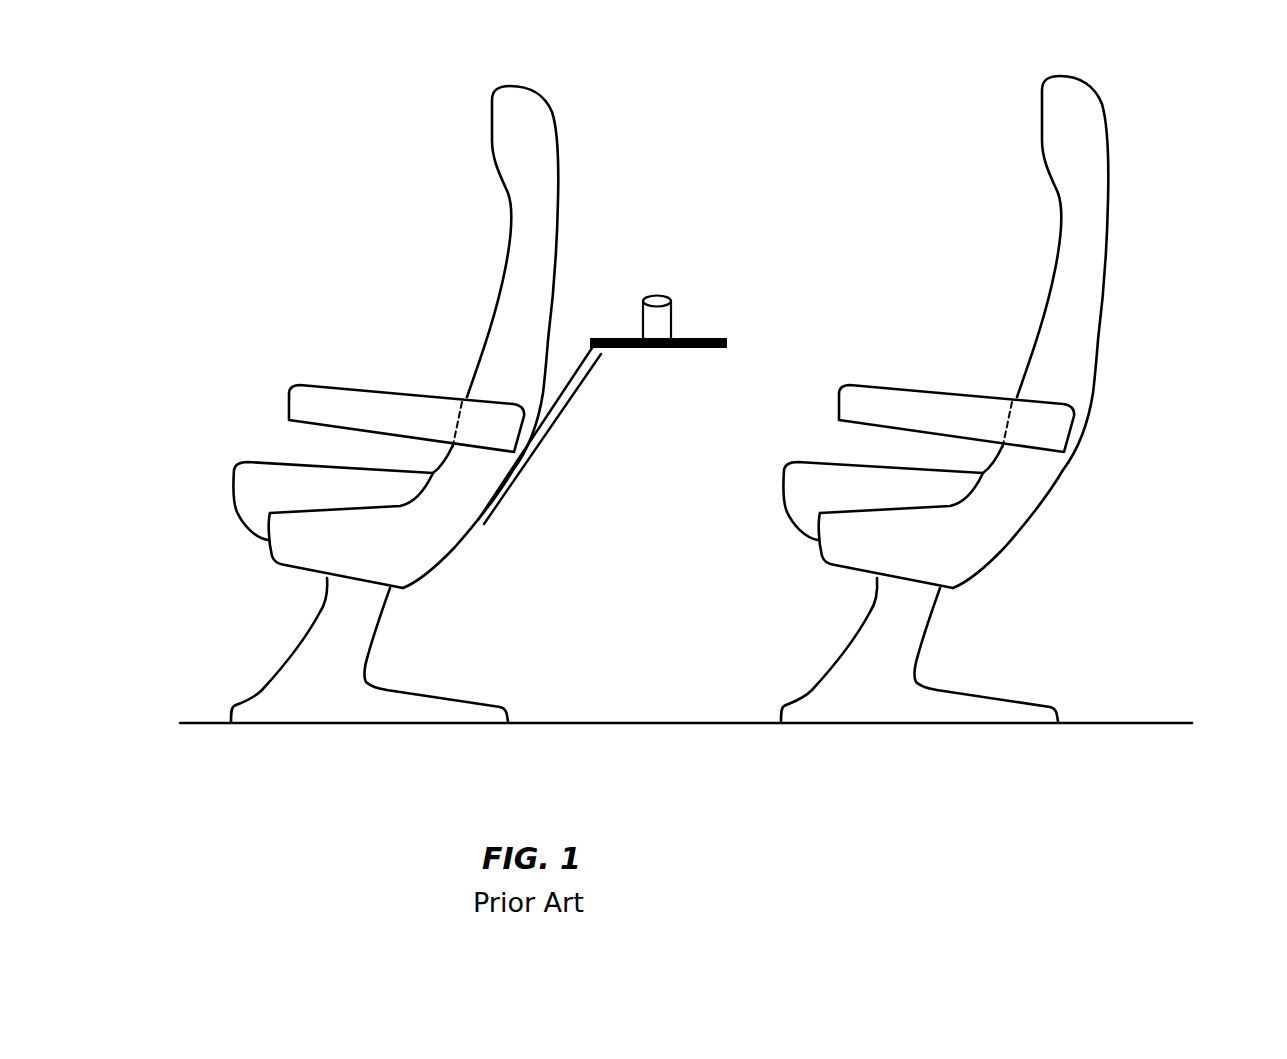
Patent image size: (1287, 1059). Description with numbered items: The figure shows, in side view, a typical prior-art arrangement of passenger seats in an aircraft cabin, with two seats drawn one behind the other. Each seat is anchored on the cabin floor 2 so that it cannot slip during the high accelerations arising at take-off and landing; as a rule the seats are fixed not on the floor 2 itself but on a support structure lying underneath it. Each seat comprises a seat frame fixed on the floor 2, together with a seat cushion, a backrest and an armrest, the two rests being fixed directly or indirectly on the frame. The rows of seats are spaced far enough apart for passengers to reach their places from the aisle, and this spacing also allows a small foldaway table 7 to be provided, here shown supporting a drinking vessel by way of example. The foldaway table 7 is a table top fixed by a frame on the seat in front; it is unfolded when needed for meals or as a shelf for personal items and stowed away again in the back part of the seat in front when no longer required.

The floor 2 is at (1142, 723).
The foldaway table 7 is at (719, 333).